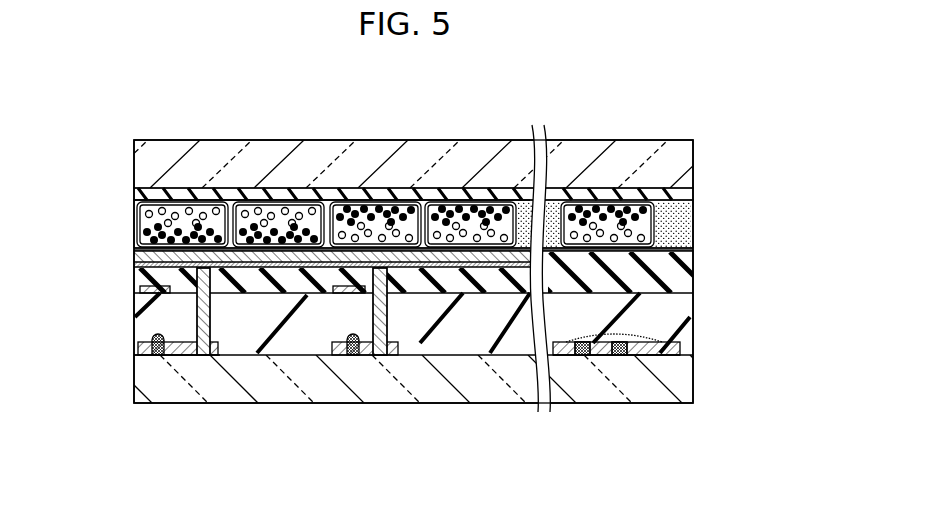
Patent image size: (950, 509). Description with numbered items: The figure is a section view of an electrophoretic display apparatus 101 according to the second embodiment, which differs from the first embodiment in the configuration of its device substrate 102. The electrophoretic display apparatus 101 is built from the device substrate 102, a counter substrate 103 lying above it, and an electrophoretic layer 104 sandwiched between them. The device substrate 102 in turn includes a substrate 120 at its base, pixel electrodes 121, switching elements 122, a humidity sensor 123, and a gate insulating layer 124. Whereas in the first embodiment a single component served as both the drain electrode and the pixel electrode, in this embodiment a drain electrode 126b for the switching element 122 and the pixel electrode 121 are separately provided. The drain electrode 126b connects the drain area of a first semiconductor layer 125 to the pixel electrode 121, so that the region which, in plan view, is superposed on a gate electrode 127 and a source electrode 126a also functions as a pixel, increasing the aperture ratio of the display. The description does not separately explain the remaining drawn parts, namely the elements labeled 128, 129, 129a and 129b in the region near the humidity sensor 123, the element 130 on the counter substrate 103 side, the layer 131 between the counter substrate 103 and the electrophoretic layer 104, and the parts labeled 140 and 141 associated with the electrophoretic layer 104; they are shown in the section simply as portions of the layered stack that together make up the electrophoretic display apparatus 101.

The electrophoretic display apparatus 101 is at (723, 123).
The device substrate 102 is at (697, 254).
The counter substrate 103 is at (697, 140).
The electrophoretic layer 104 is at (697, 199).
The substrate 120 is at (134, 375).
The pixel electrode 121 is at (134, 268).
The switching element 122 is at (178, 370).
The humidity sensor 123 is at (618, 370).
The gate insulating layer 124 is at (152, 292).
The first semiconductor layer 125 is at (152, 340).
The source electrode 126a is at (337, 356).
The drain electrode 126b is at (370, 356).
The gate electrode 127 is at (363, 265).
The capacitor insulating film 128 is at (587, 357).
The capacitor electrodes 129 is at (703, 395).
The first capacitor electrode 129a is at (582, 348).
The second capacitor electrode 129b is at (619, 348).
The opposing substrate 130 is at (134, 157).
The common electrode 131 is at (134, 195).
The binder 140 is at (205, 200).
The adhesive layer 141 is at (553, 205).